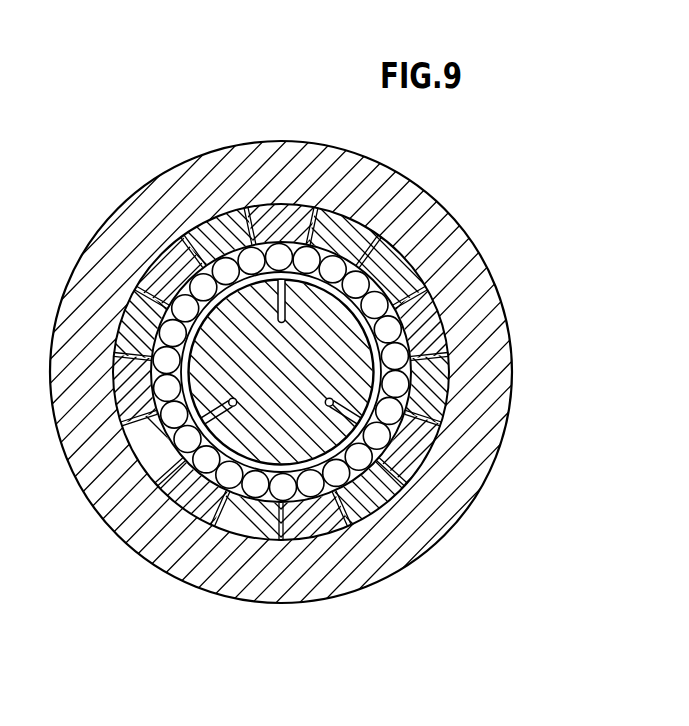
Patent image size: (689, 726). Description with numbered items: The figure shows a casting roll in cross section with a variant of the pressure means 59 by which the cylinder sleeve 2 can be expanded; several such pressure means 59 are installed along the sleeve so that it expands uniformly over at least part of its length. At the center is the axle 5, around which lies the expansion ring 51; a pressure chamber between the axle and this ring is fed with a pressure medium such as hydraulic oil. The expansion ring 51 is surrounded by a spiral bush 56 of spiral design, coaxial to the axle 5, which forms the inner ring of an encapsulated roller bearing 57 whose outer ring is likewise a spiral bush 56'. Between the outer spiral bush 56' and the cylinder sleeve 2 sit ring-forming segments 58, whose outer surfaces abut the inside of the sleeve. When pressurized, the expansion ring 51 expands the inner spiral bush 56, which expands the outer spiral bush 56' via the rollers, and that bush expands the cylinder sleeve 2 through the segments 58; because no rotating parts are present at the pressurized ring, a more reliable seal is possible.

The cylinder sleeve 2 is at (141, 522).
The axle 5 is at (317, 432).
The expansion ring 51 is at (224, 474).
The spiral bush 56 is at (231, 375).
The spiral bush 56' is at (344, 372).
The encapsulated roller bearing 57 is at (313, 482).
The segments 58 is at (400, 260).
The pressure means 59 is at (175, 237).